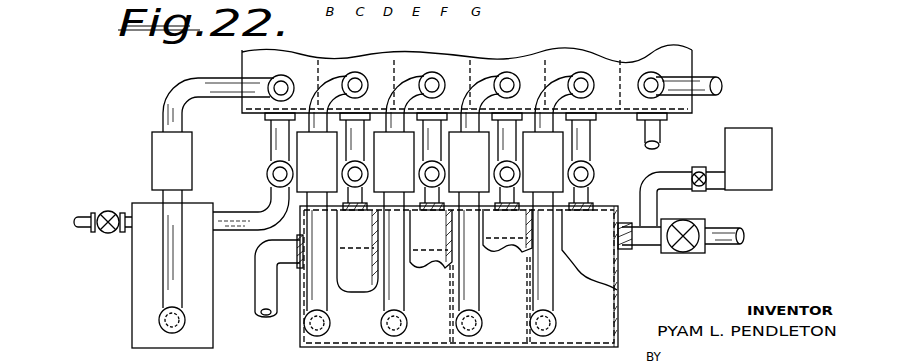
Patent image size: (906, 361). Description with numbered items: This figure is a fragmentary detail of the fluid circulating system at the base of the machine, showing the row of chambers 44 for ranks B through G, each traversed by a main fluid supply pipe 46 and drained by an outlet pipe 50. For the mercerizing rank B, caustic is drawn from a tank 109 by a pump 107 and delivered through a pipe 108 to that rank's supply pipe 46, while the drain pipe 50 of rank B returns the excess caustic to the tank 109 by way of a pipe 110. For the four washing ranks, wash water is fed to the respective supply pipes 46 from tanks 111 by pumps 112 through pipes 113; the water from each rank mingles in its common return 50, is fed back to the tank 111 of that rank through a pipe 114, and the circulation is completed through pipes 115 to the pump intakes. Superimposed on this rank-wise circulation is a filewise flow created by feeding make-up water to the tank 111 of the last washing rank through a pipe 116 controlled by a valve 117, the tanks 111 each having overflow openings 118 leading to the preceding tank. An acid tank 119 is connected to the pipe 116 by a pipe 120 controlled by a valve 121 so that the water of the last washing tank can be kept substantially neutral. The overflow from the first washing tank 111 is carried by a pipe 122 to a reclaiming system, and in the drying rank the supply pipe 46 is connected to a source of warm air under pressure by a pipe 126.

The chamber 44 is at (603, 56).
The main fluid supply pipe 46 is at (242, 63).
The outlet pipe 50 is at (270, 148).
The pump 107 is at (152, 163).
The pipe 108 is at (172, 104).
The tank 109 is at (136, 280).
The pipe 110 is at (248, 214).
The tank 111 is at (477, 250).
The pump 112 is at (430, 162).
The pipe 113 is at (318, 97).
The pipe 114 is at (594, 190).
The pipe 115 is at (393, 297).
The pipe 116 is at (654, 249).
The valve 117 is at (681, 226).
The overflow opening 118 is at (375, 240).
The acid tank 119 is at (768, 160).
The pipe 120 is at (676, 172).
The valve 121 is at (701, 170).
The pipe 122 is at (258, 290).
The pipe 126 is at (708, 85).